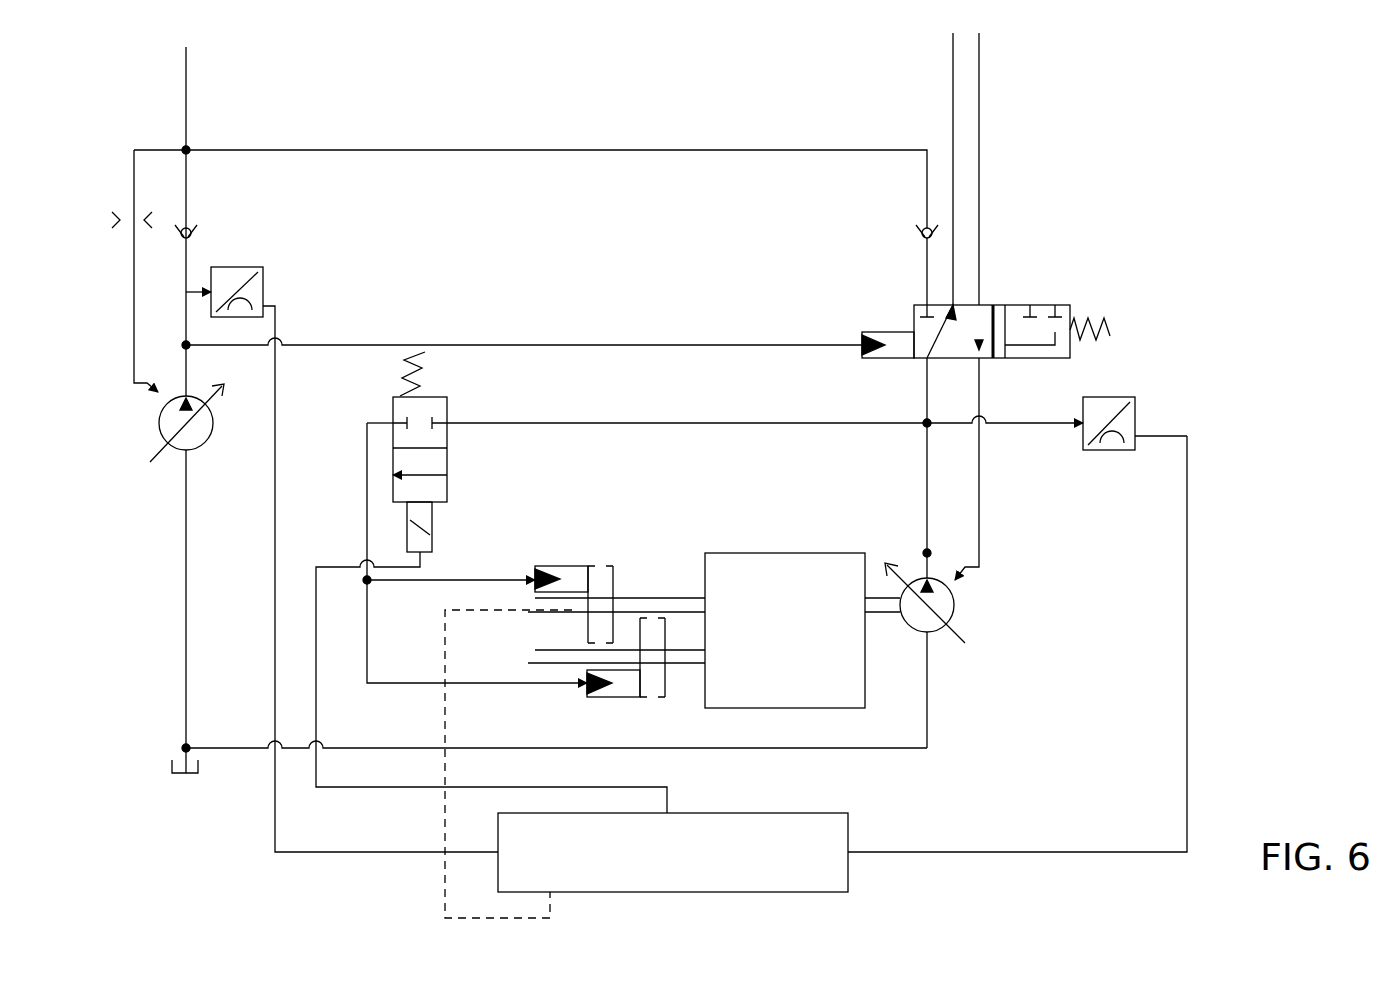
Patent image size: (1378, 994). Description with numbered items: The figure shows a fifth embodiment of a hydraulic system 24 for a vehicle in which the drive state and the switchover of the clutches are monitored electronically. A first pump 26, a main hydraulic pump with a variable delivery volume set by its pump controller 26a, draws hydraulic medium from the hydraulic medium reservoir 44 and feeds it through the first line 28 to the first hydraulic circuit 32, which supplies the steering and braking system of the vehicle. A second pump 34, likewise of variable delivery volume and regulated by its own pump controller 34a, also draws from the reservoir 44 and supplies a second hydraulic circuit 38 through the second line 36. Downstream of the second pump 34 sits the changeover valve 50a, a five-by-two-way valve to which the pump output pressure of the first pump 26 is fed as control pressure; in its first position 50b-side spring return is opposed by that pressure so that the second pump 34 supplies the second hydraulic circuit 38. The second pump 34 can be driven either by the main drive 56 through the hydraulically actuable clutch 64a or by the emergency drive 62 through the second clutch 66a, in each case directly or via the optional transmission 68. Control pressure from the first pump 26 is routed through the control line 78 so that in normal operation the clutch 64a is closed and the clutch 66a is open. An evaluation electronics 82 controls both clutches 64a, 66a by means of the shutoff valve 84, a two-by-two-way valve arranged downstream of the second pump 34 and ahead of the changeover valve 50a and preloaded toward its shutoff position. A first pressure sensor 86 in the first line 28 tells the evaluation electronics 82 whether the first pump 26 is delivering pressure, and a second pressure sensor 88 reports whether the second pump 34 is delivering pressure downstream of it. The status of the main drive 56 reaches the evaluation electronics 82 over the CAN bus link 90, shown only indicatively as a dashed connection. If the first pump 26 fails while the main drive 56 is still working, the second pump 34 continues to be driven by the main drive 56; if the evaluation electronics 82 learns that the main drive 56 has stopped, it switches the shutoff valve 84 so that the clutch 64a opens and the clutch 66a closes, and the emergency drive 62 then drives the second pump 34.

The hydraulic system 24 is at (533, 70).
The first hydraulic circuit 32 is at (186, 92).
The first line 28 is at (186, 258).
The first pressure sensor 86 is at (263, 292).
The first pump 26 is at (178, 455).
The pump controller 26a is at (158, 398).
The second hydraulic circuit 38 is at (953, 112).
The second line 36 is at (979, 162).
The changeover valve 50a is at (900, 288).
The valve spring return 50b is at (1058, 280).
The shutoff valve 84 is at (447, 407).
The control line 78 is at (367, 632).
The clutch 64a is at (615, 568).
The main drive 56 is at (572, 605).
The emergency drive 62 is at (557, 655).
The second clutch 66a is at (640, 682).
The transmission 68 is at (801, 769).
The second pump 34 is at (937, 633).
The pump controller 34a is at (960, 590).
The second pressure sensor 88 is at (1135, 403).
The hydraulic medium reservoir 44 is at (172, 762).
The evaluation electronics 82 is at (686, 869).
The CAN bus link 90 is at (445, 880).